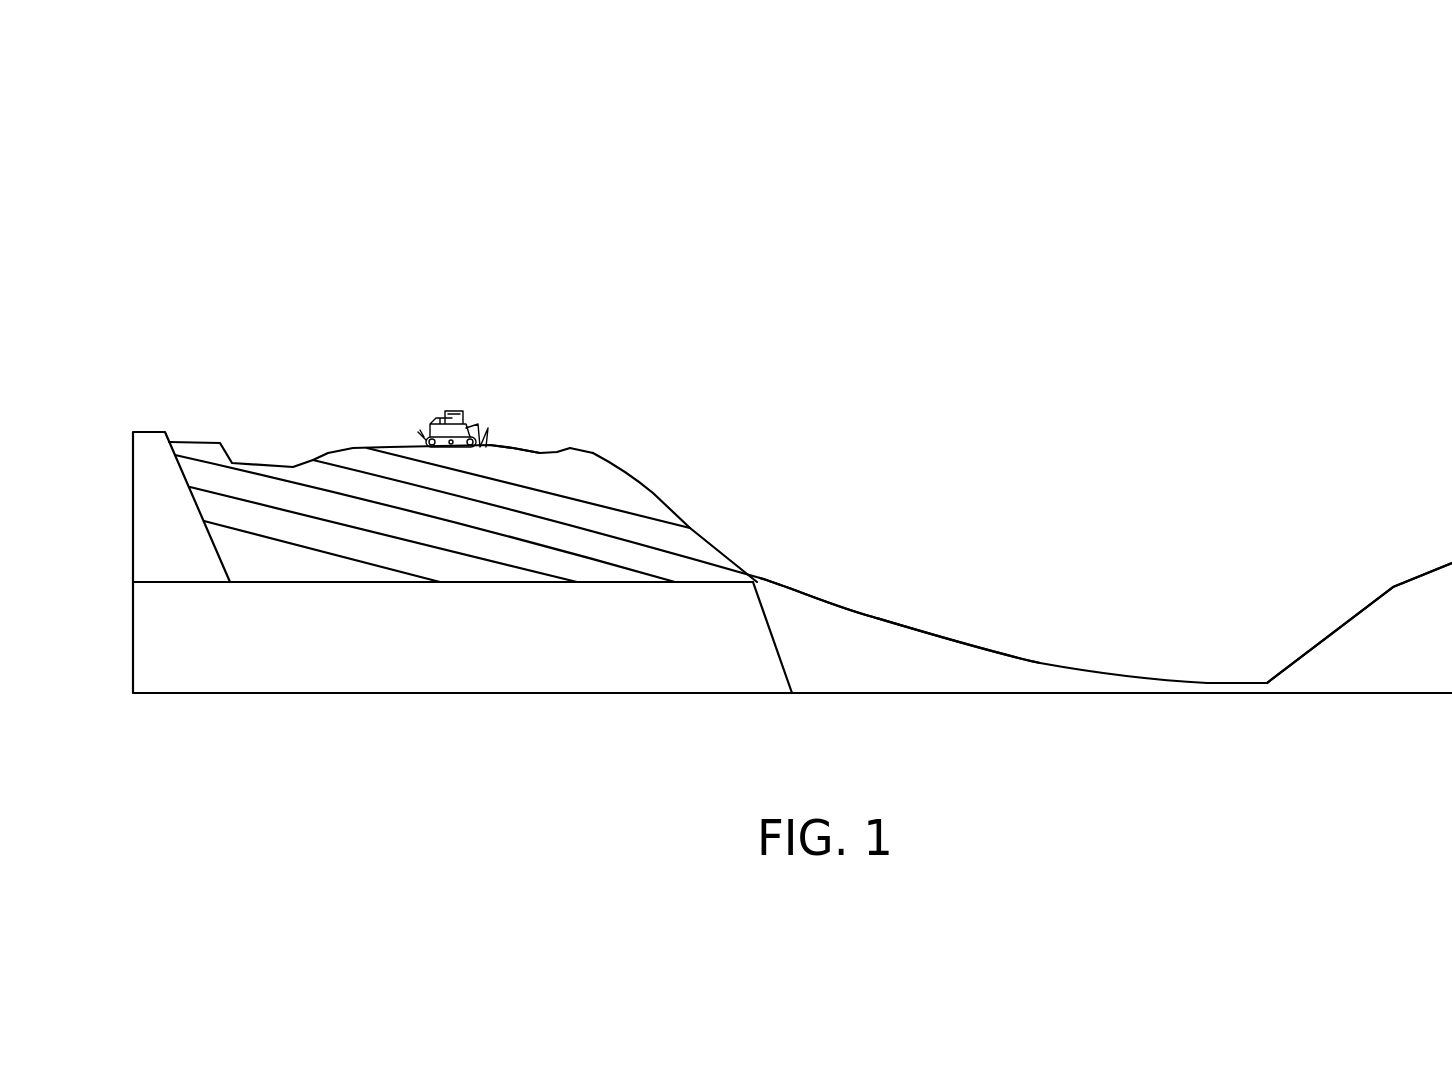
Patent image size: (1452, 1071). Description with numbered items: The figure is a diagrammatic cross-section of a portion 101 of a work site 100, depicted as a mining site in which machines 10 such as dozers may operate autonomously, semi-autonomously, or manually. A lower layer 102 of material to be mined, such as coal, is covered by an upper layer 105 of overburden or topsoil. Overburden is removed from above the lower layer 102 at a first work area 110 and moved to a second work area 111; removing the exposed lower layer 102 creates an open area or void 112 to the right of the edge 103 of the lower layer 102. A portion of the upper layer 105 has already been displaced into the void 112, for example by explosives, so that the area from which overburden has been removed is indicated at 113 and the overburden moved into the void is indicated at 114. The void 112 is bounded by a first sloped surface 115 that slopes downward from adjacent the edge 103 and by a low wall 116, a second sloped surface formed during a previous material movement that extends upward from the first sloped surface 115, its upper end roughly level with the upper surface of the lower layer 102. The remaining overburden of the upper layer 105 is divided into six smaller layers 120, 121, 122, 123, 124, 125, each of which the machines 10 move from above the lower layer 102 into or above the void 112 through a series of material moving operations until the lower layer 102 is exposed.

The machine 10 is at (445, 396).
The work site 100 is at (1232, 174).
The portion of the work site 101 is at (1254, 295).
The lower layer 102 is at (493, 640).
The edge of the lower layer 103 is at (770, 622).
The upper layer 105 is at (376, 448).
The first work area 110 is at (606, 417).
The second work area 111 is at (1132, 385).
The void 112 is at (1200, 474).
The area from which overburden has been removed 113 is at (680, 450).
The overburden moved into the void 114 is at (860, 660).
The first sloped surface 115 is at (963, 643).
The low wall 116 is at (1352, 625).
The smaller layer 120 is at (515, 458).
The smaller layer 121 is at (358, 462).
The smaller layer 122 is at (323, 480).
The smaller layer 123 is at (258, 488).
The smaller layer 124 is at (223, 510).
The smaller layer 125 is at (255, 557).